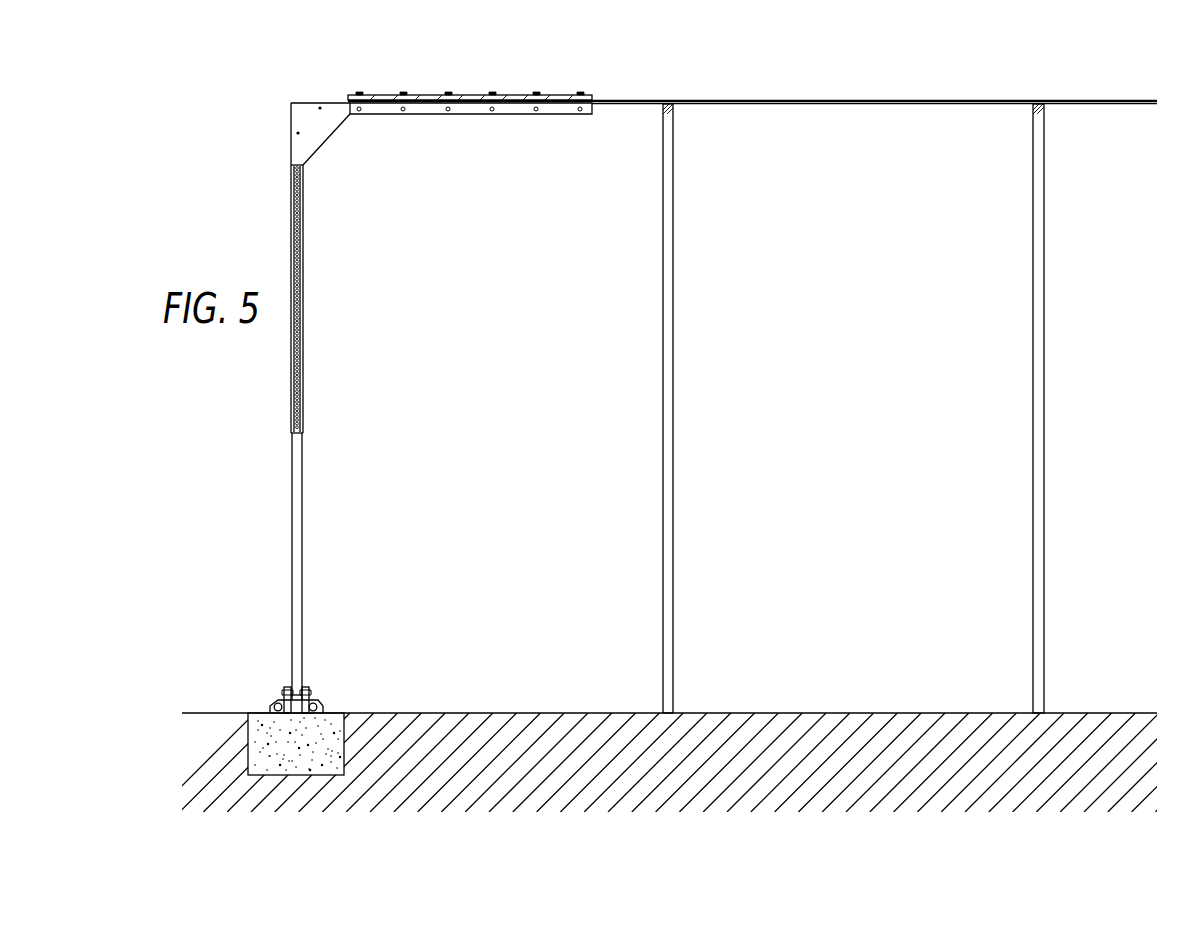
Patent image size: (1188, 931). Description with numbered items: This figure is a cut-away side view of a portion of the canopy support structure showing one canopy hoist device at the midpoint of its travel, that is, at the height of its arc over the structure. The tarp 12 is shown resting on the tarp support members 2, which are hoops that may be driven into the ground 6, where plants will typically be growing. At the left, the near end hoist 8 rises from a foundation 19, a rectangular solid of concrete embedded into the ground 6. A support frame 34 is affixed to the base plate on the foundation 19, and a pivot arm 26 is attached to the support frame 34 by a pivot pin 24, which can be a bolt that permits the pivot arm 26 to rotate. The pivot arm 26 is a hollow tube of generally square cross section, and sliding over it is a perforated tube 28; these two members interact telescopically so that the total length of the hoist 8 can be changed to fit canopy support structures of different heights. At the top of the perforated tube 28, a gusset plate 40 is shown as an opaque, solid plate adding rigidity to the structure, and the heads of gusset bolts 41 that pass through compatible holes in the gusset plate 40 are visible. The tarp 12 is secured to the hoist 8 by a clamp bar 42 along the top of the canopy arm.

The tarp support members 2 is at (672, 250).
The ground 6 is at (680, 770).
The near end hoist 8 is at (270, 470).
The tarp 12 is at (840, 100).
The foundation 19 is at (273, 775).
The pivot pin 24 is at (283, 690).
The pivot arm 26 is at (302, 530).
The perforated tube 28 is at (303, 283).
The support frame 34 is at (314, 700).
The gusset plate 40 is at (314, 134).
The gusset bolts 41 is at (320, 106).
The clamp bar 42 is at (603, 95).